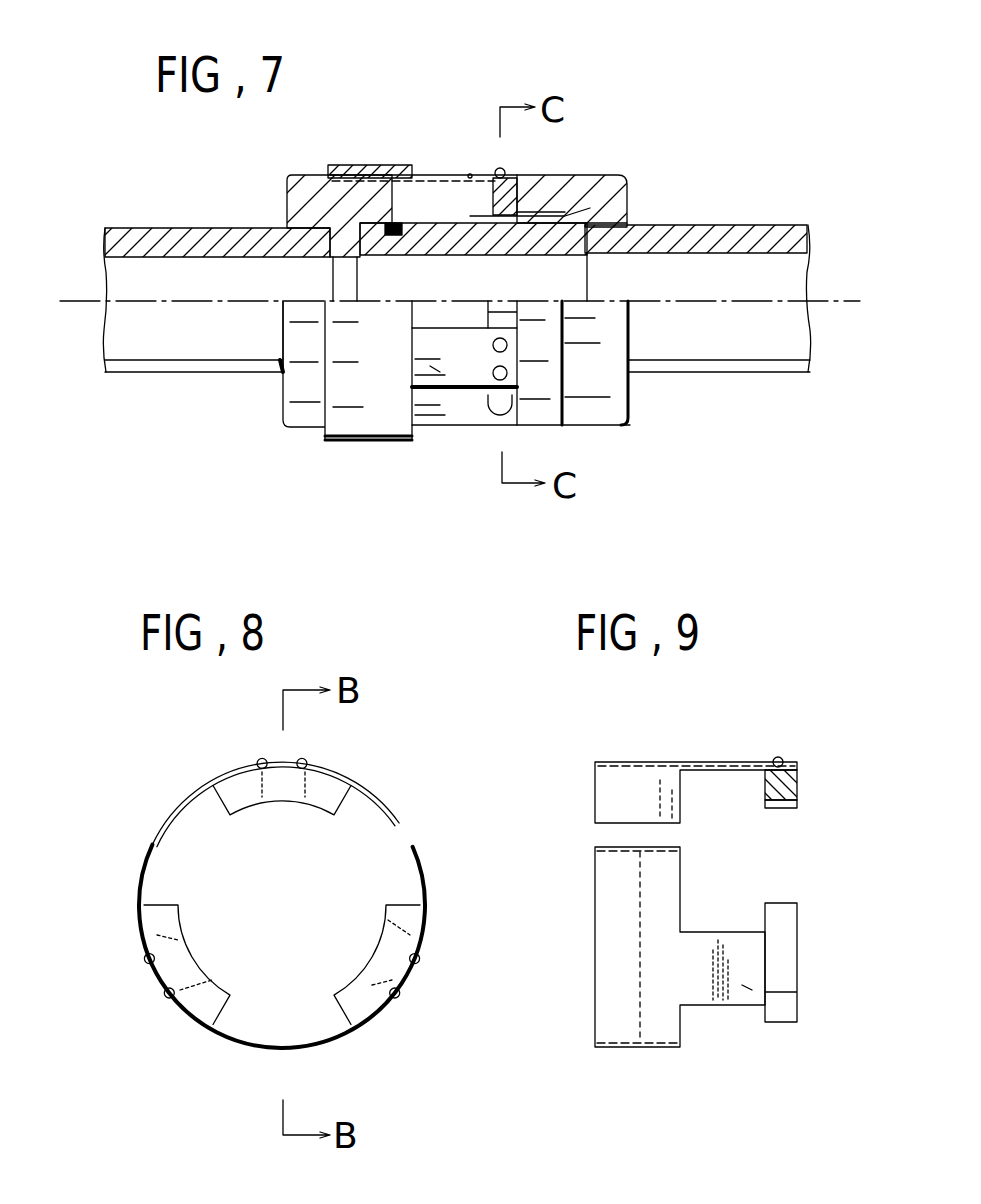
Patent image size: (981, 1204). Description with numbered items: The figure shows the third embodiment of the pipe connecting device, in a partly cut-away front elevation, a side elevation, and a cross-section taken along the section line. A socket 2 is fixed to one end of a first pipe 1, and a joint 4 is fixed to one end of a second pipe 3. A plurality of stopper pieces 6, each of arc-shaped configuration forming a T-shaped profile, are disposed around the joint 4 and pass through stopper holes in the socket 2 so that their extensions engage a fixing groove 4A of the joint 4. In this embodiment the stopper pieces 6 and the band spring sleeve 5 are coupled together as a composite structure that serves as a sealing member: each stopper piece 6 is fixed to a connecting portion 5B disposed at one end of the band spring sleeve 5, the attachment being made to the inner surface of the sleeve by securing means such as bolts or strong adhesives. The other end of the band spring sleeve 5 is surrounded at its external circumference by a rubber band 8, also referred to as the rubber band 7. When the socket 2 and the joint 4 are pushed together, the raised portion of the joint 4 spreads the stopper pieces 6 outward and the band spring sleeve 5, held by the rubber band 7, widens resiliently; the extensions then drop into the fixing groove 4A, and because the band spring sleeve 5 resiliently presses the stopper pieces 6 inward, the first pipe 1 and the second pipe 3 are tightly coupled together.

In FIG. 7, the first pipe 1 is at (150, 237).
In FIG. 7, the socket 2 is at (300, 200).
In FIG. 7, the second pipe 3 is at (750, 226).
In FIG. 7, the joint 4 is at (610, 185).
In FIG. 7, the fixing groove 4A is at (627, 212).
In FIG. 7, the band spring sleeve 5 is at (430, 175).
In FIG. 8, the band spring sleeve 5 is at (370, 790).
In FIG. 9, the band spring sleeve 5 is at (640, 760).
In FIG. 7, the connecting portion 5B is at (472, 175).
In FIG. 8, the connecting portion 5B is at (272, 760).
In FIG. 9, the connecting portion 5B is at (760, 760).
In FIG. 7, the stopper piece 6 is at (520, 176).
In FIG. 8, the stopper piece 6 is at (325, 790).
In FIG. 9, the stopper piece 6 is at (800, 775).
In FIG. 7, the rubber band 7 is at (392, 172).
In FIG. 7, the rubber band 8 is at (345, 165).